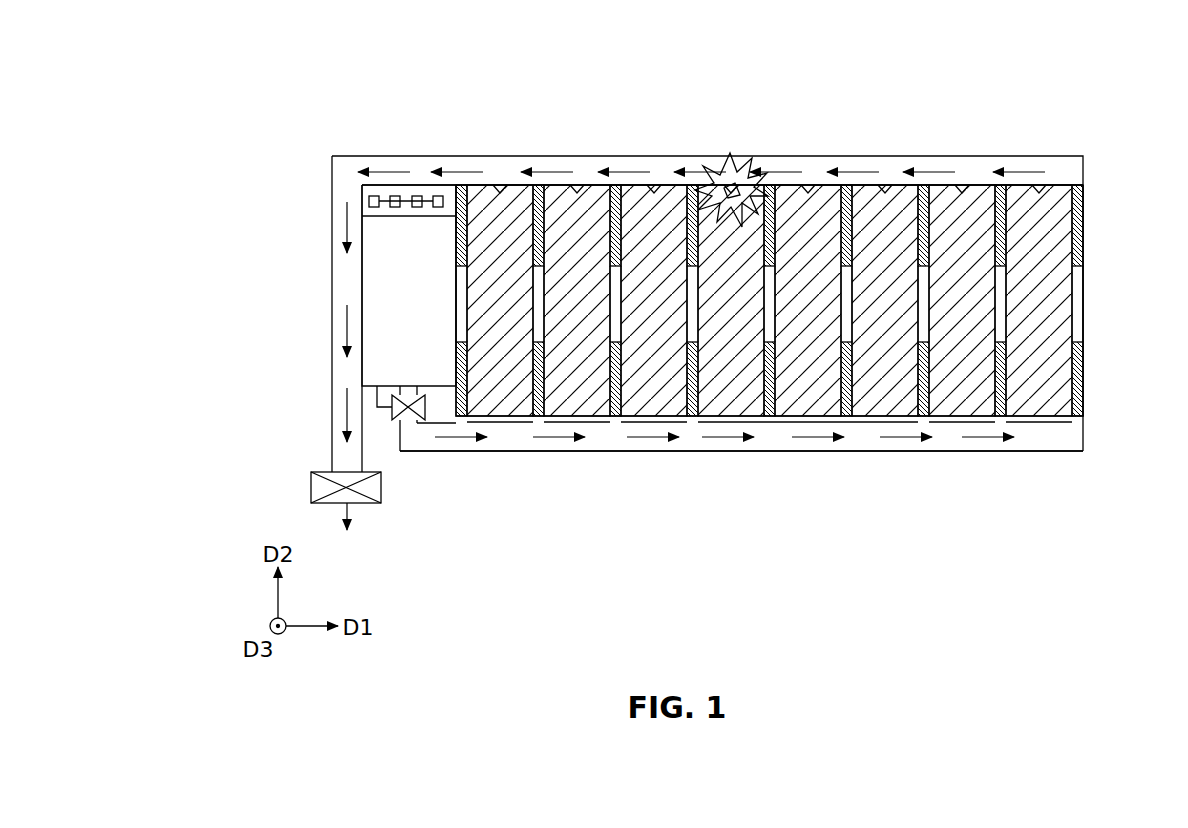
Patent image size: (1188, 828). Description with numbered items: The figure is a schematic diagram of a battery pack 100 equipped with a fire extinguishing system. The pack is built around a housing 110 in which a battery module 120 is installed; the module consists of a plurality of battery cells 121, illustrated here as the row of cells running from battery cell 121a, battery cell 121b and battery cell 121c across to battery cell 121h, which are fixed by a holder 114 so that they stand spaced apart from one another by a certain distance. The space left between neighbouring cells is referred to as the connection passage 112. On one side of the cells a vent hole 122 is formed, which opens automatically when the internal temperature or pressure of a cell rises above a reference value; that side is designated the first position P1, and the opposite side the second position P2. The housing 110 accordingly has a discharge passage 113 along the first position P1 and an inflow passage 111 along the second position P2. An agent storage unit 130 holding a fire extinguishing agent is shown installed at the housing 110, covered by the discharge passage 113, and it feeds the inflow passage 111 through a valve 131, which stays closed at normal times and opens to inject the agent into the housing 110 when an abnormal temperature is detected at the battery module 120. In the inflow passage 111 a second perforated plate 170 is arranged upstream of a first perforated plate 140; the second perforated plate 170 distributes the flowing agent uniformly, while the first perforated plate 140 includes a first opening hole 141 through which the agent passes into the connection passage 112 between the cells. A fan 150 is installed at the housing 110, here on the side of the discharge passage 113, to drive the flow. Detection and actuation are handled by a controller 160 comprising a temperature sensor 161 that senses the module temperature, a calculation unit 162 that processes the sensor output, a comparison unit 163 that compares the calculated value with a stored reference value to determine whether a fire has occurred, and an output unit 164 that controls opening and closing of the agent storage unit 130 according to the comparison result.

The battery pack 100 is at (1098, 47).
The housing 110 is at (1097, 184).
The inflow passage 111 is at (1043, 440).
The connection passage 112 is at (1003, 308).
The discharge passage 113 is at (342, 183).
The holder 114 is at (1005, 233).
The battery module 120 is at (1051, 182).
The battery cells 121 is at (769, 372).
The battery cell 121a is at (505, 403).
The battery cell 121b is at (585, 403).
The battery cell 121c is at (657, 403).
The battery cell 121h is at (1027, 346).
The vent hole 122 is at (657, 185).
The agent storage unit 130 is at (368, 287).
The valve 131 is at (402, 417).
The first perforated plate 140 is at (1052, 423).
The first opening hole 141 is at (768, 430).
The fan 150 is at (311, 487).
The controller 160 is at (410, 131).
The temperature sensor 161 is at (372, 196).
The calculation unit 162 is at (395, 196).
The comparison unit 163 is at (417, 196).
The output unit 164 is at (466, 156).
The second perforated plate 170 is at (442, 447).
The first position P1 is at (817, 172).
The second position P2 is at (945, 438).